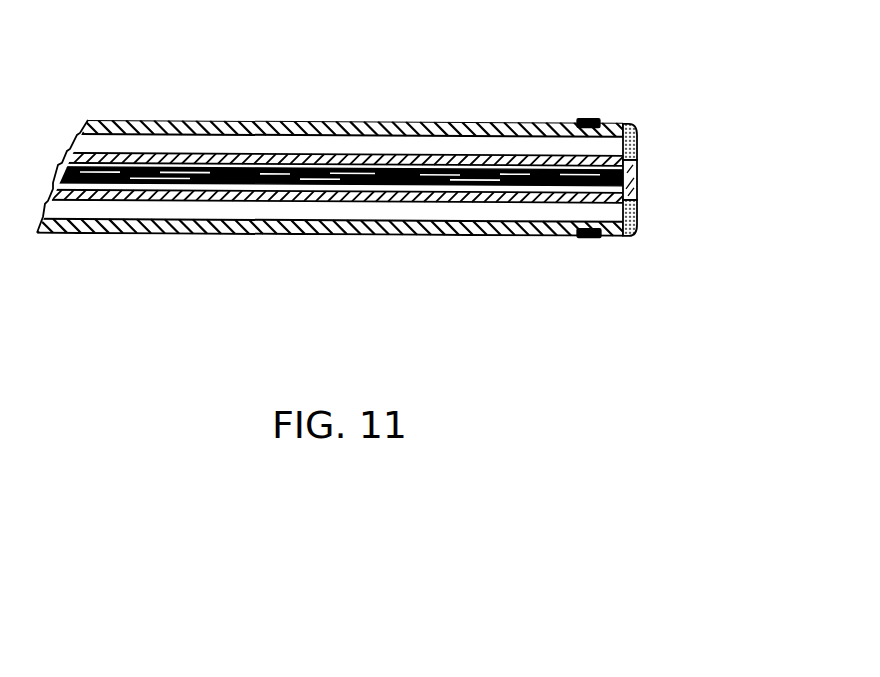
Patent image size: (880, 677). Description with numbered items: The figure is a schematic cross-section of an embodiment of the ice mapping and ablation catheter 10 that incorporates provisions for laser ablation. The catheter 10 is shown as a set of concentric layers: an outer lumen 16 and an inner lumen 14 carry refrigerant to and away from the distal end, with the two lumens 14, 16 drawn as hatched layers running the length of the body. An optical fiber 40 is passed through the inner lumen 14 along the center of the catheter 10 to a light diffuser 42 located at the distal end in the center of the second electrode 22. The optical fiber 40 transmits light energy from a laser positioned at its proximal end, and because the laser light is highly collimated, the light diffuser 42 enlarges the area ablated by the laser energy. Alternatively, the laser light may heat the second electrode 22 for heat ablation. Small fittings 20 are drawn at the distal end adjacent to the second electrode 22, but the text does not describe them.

The ice mapping and ablation catheter 10 is at (242, 265).
The inner lumen 14 is at (368, 168).
The outer lumen 16 is at (208, 142).
The retaining clip 20 is at (588, 118).
The second electrode 22 is at (633, 137).
The optical fiber 40 is at (538, 183).
The light diffuser 42 is at (637, 175).